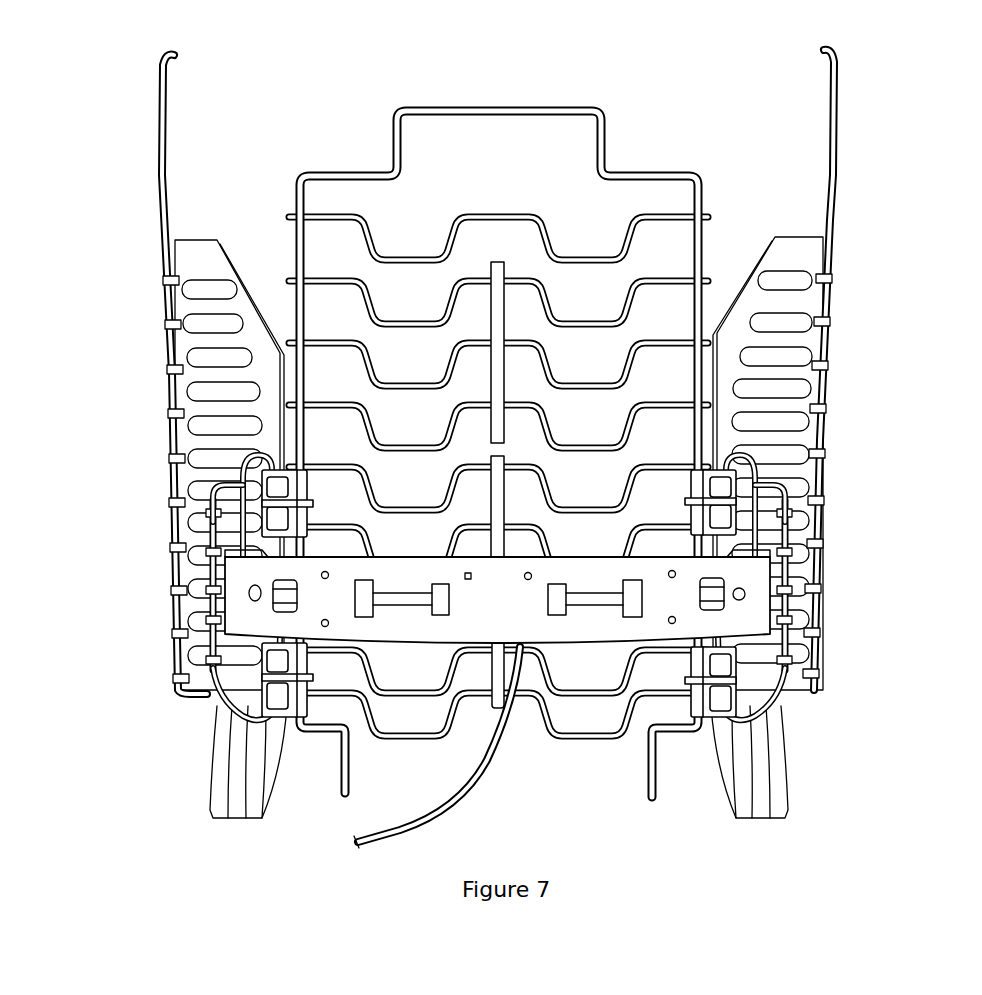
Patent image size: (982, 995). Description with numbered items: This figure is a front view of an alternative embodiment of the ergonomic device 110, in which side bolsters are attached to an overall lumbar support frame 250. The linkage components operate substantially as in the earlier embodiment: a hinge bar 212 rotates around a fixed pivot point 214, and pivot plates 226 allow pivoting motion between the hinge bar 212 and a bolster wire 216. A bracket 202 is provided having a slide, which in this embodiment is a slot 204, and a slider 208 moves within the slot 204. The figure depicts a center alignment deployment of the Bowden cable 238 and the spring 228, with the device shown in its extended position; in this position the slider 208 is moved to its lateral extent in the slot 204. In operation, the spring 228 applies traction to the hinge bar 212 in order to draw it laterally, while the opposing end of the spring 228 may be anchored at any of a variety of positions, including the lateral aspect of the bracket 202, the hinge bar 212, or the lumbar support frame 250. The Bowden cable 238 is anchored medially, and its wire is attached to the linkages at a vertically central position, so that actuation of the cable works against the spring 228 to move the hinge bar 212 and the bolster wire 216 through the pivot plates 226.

The ergonomic device 110 is at (552, 75).
The lumbar support frame 250 is at (640, 172).
The pivot plate 226 is at (225, 377).
The hinge bar 212 is at (242, 462).
The fixed pivot point 214 is at (250, 558).
The bolster wire 216 is at (215, 573).
The spring 228 is at (262, 594).
The slider 208 is at (365, 604).
The bracket 202 is at (352, 633).
The slot 204 is at (590, 602).
The Bowden cable 238 is at (468, 785).